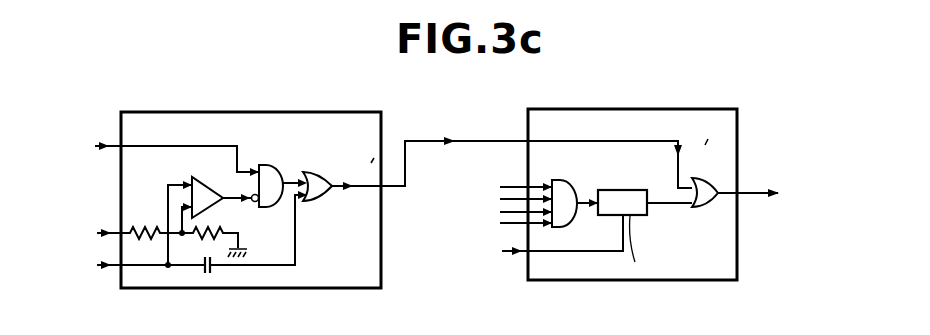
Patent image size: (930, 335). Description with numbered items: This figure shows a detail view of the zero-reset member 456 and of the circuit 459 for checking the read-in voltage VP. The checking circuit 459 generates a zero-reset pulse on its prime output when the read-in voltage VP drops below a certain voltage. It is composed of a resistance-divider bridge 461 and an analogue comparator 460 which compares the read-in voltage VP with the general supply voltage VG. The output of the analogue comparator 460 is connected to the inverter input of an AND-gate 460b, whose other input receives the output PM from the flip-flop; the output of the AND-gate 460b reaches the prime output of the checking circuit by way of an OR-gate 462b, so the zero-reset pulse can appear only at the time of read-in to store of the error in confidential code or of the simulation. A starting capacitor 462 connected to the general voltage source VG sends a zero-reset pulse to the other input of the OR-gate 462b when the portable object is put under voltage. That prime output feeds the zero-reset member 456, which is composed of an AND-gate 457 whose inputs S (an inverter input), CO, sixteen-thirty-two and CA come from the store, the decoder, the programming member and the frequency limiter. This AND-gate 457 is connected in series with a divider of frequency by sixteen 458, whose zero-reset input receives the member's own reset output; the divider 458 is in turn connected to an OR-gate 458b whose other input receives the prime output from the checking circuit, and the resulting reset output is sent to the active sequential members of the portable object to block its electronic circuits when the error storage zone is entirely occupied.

The circuit for checking the read-in voltage VP 459 is at (242, 123).
The analogue comparator 460 is at (203, 183).
The AND-gate 460b is at (268, 173).
The OR-gate 462b is at (317, 192).
The resistance-divider bridge 461 is at (188, 253).
The starting capacitor 462 is at (213, 267).
The zero-reset member 456 is at (661, 117).
The AND-gate 457 is at (567, 181).
The divider of frequency by 16 458 is at (638, 217).
The OR-gate 458b is at (705, 207).